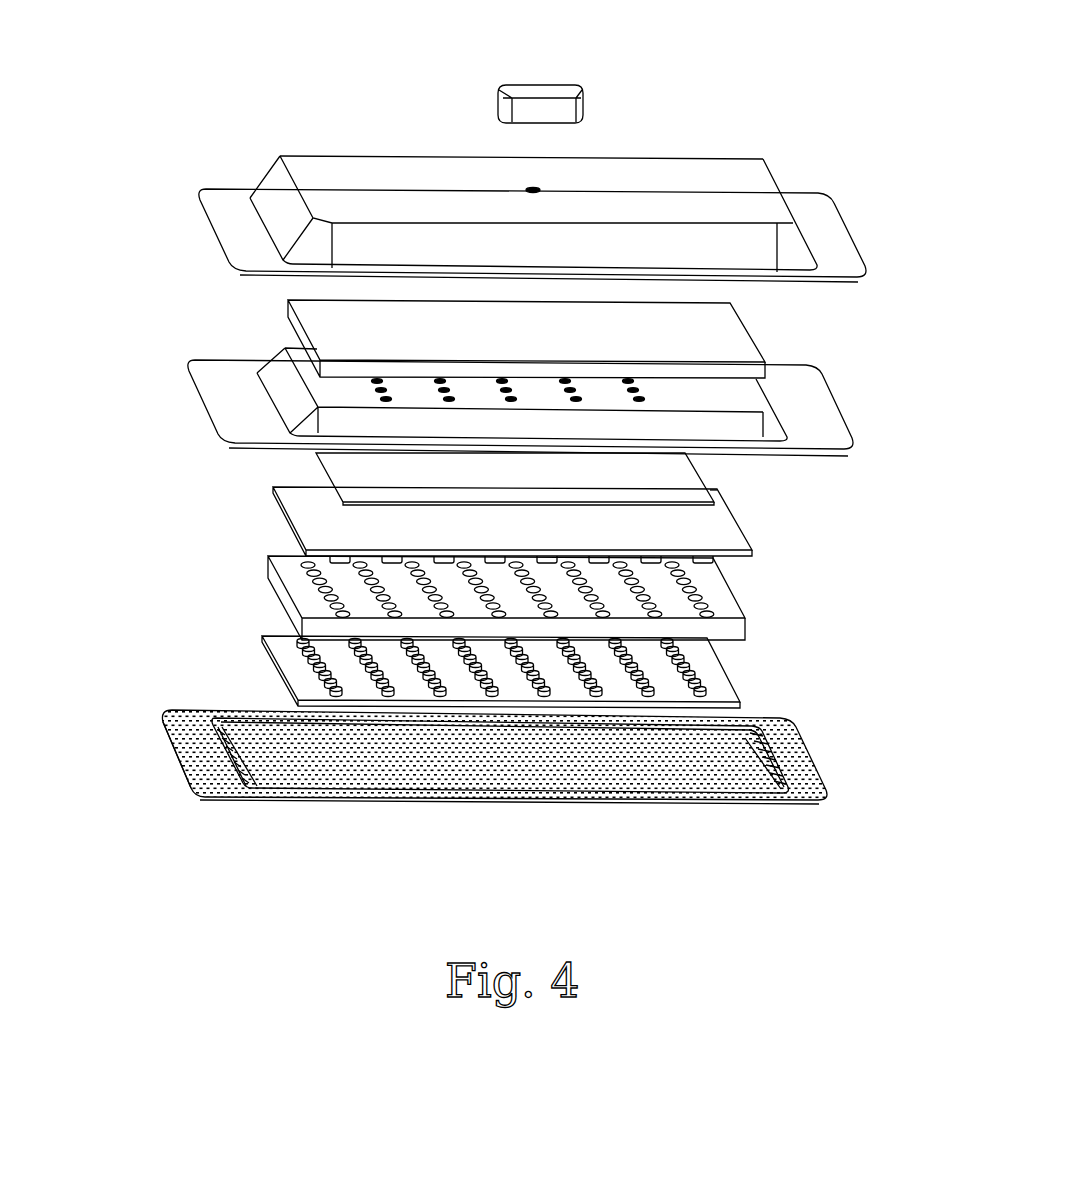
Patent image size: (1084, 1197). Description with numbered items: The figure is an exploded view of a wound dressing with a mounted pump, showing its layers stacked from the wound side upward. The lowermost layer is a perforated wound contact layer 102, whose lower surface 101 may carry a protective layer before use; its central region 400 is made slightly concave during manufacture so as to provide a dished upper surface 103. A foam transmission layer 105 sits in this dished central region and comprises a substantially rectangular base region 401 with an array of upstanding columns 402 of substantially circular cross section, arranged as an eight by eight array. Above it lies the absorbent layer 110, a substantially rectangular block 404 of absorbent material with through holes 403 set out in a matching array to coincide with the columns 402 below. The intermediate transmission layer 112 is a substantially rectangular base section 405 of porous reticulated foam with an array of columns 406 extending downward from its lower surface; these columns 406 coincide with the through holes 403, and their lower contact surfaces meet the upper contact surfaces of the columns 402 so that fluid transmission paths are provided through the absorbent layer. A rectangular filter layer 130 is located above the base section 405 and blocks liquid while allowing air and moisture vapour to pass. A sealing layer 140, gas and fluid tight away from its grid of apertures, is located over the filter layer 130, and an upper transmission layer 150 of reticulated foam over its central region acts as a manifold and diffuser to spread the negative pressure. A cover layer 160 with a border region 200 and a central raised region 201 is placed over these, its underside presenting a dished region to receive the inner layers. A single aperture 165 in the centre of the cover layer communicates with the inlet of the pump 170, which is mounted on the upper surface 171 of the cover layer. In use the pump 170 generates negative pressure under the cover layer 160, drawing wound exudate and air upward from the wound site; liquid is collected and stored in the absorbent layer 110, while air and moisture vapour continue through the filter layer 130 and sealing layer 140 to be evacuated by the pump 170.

The lower surface 101 is at (413, 799).
The wound contact layer 102 is at (687, 783).
The dished upper surface 103 is at (207, 763).
The transmission layer 105 is at (708, 690).
The absorbent layer 110 is at (743, 612).
The intermediate transmission layer 112 is at (722, 550).
The filter layer 130 is at (695, 481).
The sealing layer 140 is at (813, 402).
The upper transmission layer 150 is at (750, 332).
The cover layer 160 is at (795, 222).
The aperture 165 is at (531, 188).
The pump 170 is at (582, 95).
The upper surface 171 is at (673, 177).
The border region 200 is at (232, 200).
The central raised region 201 is at (345, 168).
The central region 400 is at (327, 768).
The base region 401 is at (287, 667).
The columns 402 is at (697, 662).
The through holes 403 is at (305, 575).
The rectangular block 404 is at (722, 593).
The base section 405 is at (287, 500).
The columns 406 is at (300, 542).